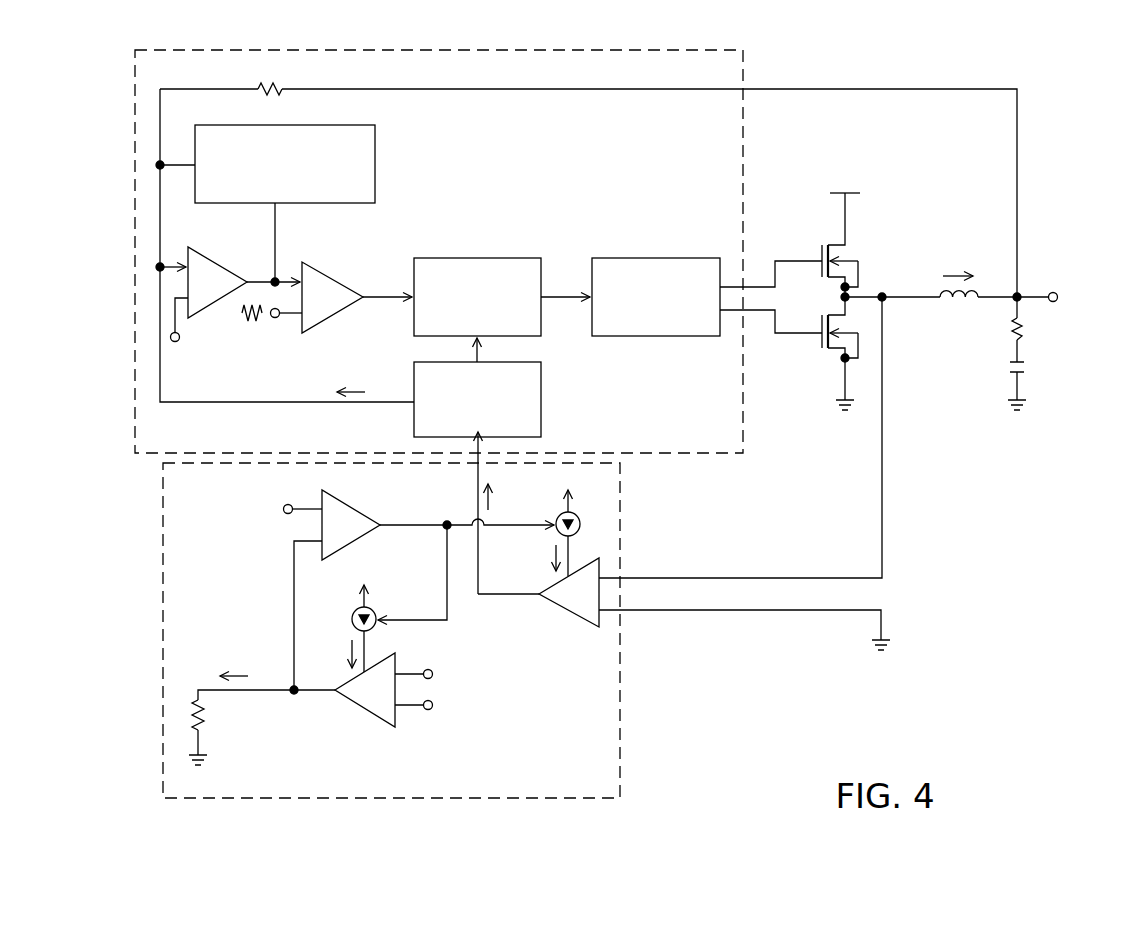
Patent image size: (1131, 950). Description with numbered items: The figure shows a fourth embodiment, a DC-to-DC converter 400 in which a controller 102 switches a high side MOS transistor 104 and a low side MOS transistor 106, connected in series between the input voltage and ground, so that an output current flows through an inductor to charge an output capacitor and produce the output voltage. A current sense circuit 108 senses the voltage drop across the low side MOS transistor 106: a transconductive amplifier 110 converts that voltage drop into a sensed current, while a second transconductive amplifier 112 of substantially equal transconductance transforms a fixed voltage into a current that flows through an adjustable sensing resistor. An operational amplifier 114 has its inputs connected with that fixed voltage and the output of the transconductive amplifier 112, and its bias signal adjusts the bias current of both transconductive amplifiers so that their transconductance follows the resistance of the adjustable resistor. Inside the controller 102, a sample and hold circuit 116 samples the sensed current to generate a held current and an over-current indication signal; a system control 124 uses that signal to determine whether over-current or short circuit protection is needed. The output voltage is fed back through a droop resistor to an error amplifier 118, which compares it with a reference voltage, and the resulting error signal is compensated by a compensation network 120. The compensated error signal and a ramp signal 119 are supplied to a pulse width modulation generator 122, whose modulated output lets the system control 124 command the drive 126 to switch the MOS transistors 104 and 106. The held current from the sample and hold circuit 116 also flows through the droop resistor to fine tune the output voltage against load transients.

The DC-to-DC converter 400 is at (1080, 98).
The controller 102 is at (692, 453).
The MOS transistor 104 is at (819, 233).
The low side MOS transistor 106 is at (819, 362).
The current sense circuit 108 is at (162, 605).
The transconductive amplifier 110 is at (572, 628).
The transconductive amplifier 112 is at (352, 708).
The operational amplifier 114 is at (350, 500).
The sample and hold circuit 116 is at (541, 400).
The error amplifier 118 is at (218, 265).
The ramp signal 119 is at (256, 330).
The compensation network 120 is at (375, 160).
The pulse width modulation generator 122 is at (338, 277).
The system control 124 is at (470, 258).
The drive 126 is at (652, 258).